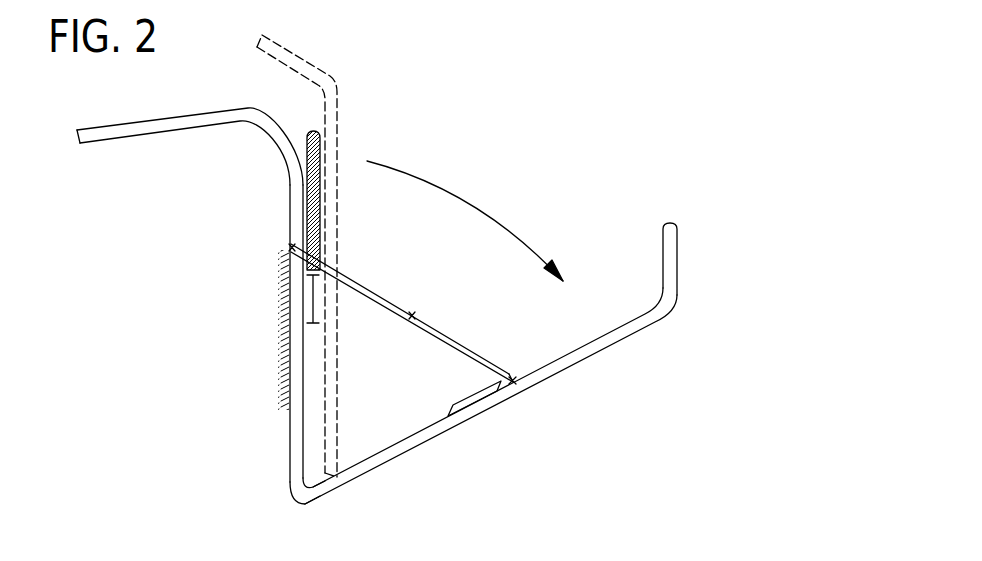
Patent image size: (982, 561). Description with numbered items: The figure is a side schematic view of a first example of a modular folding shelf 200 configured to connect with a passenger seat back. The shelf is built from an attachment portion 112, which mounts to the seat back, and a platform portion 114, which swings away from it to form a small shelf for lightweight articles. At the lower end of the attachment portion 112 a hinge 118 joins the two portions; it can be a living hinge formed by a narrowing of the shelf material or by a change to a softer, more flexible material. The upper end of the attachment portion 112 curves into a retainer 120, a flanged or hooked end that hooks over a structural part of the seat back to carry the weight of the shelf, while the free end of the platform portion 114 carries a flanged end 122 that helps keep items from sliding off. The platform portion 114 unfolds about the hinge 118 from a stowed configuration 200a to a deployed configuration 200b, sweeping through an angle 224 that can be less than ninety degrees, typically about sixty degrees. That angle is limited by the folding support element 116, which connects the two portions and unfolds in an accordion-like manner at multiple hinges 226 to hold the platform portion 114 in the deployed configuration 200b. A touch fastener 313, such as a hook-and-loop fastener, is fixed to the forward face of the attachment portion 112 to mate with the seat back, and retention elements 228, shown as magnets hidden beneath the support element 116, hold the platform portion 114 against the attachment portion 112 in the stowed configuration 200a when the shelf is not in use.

The modular folding shelf 200 is at (582, 113).
The stowed configuration 200a is at (328, 64).
The deployed configuration 200b is at (652, 337).
The attachment portion 112 is at (290, 428).
The platform portion 114 is at (553, 376).
The folding support element 116 is at (447, 334).
The hinge 118 is at (301, 497).
The retainer 120 is at (138, 135).
The flanged end 122 is at (683, 231).
The angle 224 is at (470, 199).
The hinges 226 is at (291, 246).
The retention elements 228 is at (306, 318).
The touch fastener 313 is at (277, 288).